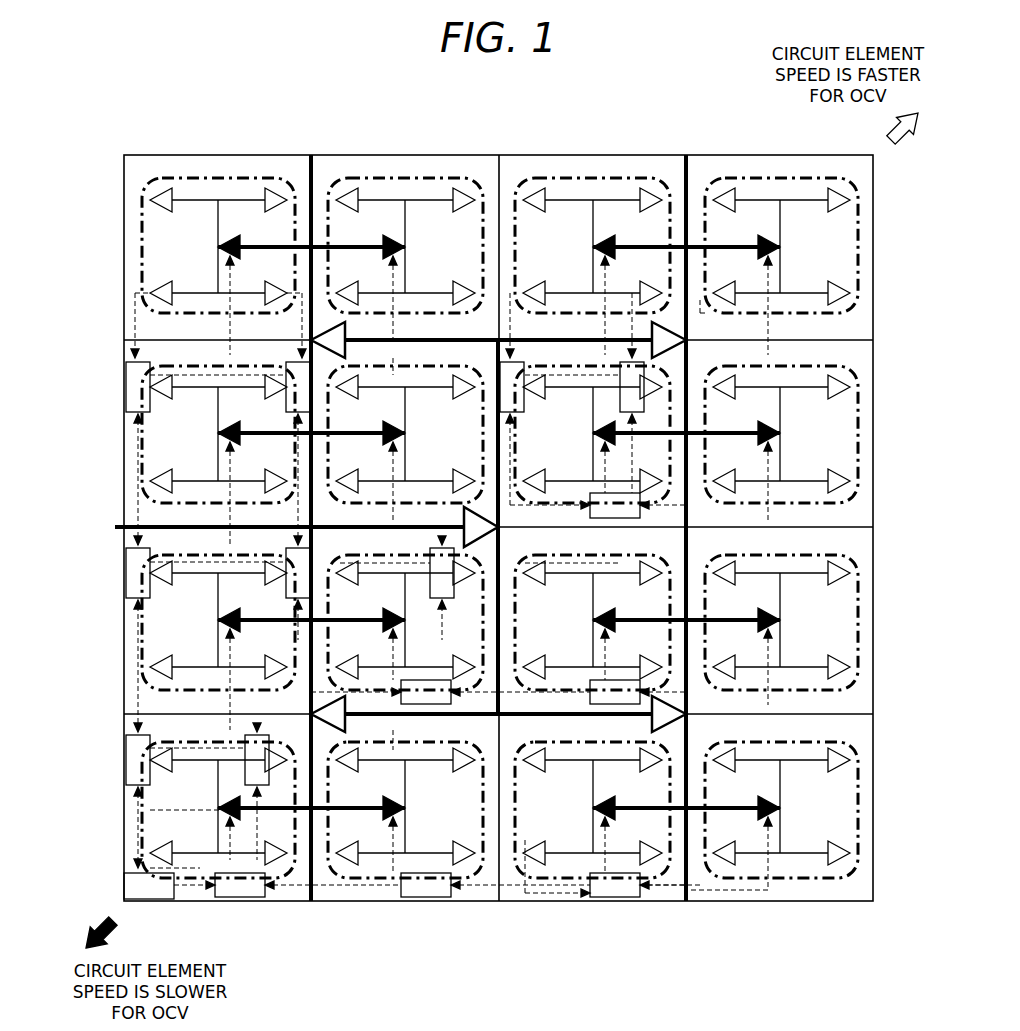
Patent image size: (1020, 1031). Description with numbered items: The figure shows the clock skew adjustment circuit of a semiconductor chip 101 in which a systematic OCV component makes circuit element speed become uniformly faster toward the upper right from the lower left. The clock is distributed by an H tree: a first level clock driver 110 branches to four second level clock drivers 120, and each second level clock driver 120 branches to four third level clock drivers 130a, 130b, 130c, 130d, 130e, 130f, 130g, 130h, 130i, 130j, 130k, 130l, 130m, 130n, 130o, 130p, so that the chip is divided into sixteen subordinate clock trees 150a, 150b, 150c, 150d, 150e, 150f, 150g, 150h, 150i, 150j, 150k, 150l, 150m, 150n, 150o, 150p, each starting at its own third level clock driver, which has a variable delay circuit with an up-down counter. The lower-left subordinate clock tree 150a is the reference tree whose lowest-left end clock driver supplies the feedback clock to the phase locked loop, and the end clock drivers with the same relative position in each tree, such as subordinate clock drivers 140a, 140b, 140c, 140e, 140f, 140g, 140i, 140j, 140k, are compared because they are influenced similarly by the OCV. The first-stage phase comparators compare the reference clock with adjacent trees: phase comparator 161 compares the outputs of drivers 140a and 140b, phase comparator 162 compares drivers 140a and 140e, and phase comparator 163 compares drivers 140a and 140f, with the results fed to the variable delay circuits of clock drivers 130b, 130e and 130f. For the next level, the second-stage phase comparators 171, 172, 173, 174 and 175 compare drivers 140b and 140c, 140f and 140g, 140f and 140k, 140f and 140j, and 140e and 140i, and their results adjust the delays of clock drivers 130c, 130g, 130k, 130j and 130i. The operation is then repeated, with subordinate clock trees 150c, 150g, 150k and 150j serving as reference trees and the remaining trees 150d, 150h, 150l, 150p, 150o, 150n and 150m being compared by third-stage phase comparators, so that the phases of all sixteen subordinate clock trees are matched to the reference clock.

The semiconductor chip 101 is at (878, 222).
The first level clock driver 110 is at (250, 523).
The second level clock driver 120 is at (311, 337).
The third level clock driver 130a is at (216, 808).
The third level clock driver 130b is at (407, 804).
The third level clock driver 130c is at (593, 808).
The third level clock driver 130d is at (782, 808).
The third level clock driver 130e is at (218, 620).
The third level clock driver 130f is at (407, 618).
The third level clock driver 130g is at (593, 618).
The third level clock driver 130h is at (782, 620).
The third level clock driver 130i is at (218, 433).
The third level clock driver 130j is at (407, 433).
The third level clock driver 130k is at (593, 436).
The third level clock driver 130l is at (782, 433).
The third level clock driver 130m is at (216, 246).
The third level clock driver 130n is at (407, 247).
The third level clock driver 130o is at (593, 247).
The third level clock driver 130p is at (782, 247).
The subordinate clock driver 140a is at (154, 862).
The subordinate clock driver 140b is at (348, 862).
The subordinate clock driver 140c is at (544, 862).
The subordinate clock driver 140e is at (150, 667).
The subordinate clock driver 140f is at (336, 665).
The subordinate clock driver 140g is at (544, 667).
The subordinate clock driver 140i is at (150, 481).
The subordinate clock driver 140j is at (351, 480).
The subordinate clock driver 140k is at (524, 480).
The subordinate clock tree 150a is at (234, 828).
The subordinate clock tree 150b is at (450, 832).
The subordinate clock tree 150c is at (611, 838).
The subordinate clock tree 150d is at (766, 838).
The subordinate clock tree 150e is at (186, 631).
The subordinate clock tree 150f is at (416, 635).
The subordinate clock tree 150g is at (600, 618).
The subordinate clock tree 150h is at (774, 618).
The subordinate clock tree 150i is at (186, 443).
The subordinate clock tree 150j is at (400, 431).
The subordinate clock tree 150k is at (553, 430).
The subordinate clock tree 150l is at (772, 431).
The subordinate clock tree 150m is at (221, 239).
The subordinate clock tree 150n is at (397, 230).
The subordinate clock tree 150o is at (596, 239).
The subordinate clock tree 150p is at (772, 237).
The phase comparator 161 is at (240, 897).
The phase comparator 162 is at (126, 750).
The phase comparator 163 is at (245, 785).
The phase comparator 171 is at (425, 897).
The phase comparator 172 is at (425, 704).
The phase comparator 173 is at (455, 564).
The phase comparator 174 is at (286, 582).
The phase comparator 175 is at (126, 572).